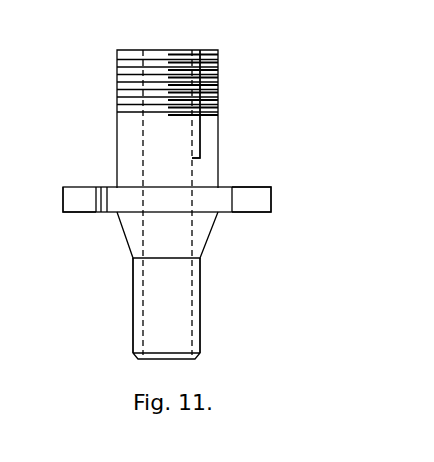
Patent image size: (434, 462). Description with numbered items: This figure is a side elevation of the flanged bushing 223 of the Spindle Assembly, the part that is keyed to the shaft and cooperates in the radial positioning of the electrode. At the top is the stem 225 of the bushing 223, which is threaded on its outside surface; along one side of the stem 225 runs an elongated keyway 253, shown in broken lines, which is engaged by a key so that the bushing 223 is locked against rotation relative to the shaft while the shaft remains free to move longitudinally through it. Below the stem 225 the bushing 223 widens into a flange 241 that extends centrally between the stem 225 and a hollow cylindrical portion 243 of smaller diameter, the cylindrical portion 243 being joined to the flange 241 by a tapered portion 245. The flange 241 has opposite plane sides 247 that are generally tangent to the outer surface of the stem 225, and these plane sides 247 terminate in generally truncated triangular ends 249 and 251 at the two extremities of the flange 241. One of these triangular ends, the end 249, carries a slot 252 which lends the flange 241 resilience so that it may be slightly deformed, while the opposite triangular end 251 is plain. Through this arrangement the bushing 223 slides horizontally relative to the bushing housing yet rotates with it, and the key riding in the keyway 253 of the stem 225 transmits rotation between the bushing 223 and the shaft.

The flanged bushing 223 is at (265, 297).
The stem 225 is at (211, 148).
The flange 241 is at (262, 200).
The hollow cylindrical portion 243 is at (194, 340).
The tapered portion 245 is at (203, 227).
The plane sides 247 is at (122, 197).
The truncated triangular end 249 is at (75, 200).
The truncated triangular end 251 is at (245, 203).
The slot 252 is at (96, 187).
The keyway 253 is at (201, 126).